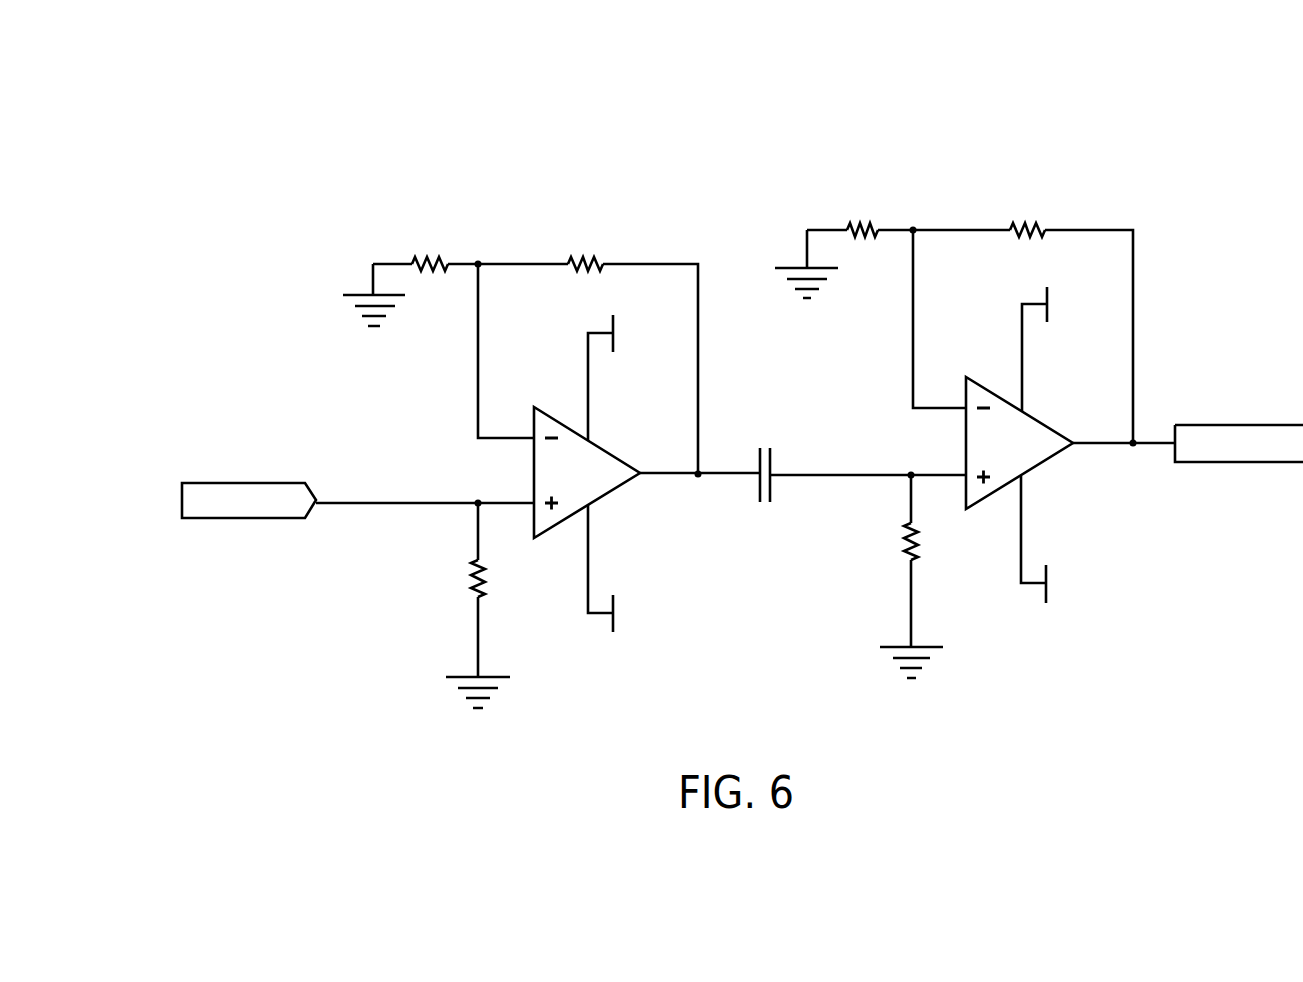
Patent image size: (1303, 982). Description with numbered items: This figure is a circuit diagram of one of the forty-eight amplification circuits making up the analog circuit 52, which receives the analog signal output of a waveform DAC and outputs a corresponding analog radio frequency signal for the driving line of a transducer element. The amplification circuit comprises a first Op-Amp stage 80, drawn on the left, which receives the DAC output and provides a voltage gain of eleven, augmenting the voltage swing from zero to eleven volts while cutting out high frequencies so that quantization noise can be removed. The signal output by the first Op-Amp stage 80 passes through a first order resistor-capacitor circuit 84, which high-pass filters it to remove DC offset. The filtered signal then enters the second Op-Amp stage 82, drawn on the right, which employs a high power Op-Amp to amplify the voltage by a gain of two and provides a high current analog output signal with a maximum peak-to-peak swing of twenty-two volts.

The analog circuit 52 is at (1076, 147).
The first Op-Amp stage 80 is at (661, 235).
The second Op-Amp stage 82 is at (1158, 322).
The first order resistor-capacitor (RC) circuit 84 is at (815, 559).